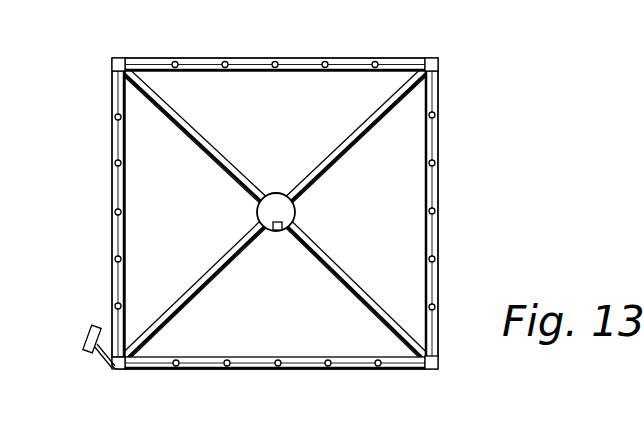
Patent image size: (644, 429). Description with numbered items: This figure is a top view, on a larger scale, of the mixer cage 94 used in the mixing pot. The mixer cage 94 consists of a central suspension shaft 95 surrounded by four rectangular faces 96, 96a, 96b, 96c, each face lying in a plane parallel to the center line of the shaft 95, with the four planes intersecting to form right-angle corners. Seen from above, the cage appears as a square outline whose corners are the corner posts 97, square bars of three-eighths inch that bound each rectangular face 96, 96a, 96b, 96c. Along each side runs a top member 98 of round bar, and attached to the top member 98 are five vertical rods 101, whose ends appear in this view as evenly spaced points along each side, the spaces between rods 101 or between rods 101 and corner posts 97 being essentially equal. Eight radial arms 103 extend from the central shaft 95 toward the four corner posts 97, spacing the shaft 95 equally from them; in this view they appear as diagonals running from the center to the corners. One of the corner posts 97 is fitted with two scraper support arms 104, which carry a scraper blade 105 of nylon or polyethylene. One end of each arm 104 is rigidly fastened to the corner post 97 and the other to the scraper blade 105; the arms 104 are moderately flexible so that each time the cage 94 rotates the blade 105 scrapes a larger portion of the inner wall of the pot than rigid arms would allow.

The mixer cage 94 is at (284, 215).
The central suspension shaft 95 is at (270, 197).
The rectangular face 96 is at (249, 376).
The rectangular face 96a is at (108, 174).
The rectangular face 96b is at (298, 50).
The rectangular face 96c is at (448, 168).
The corner post 97 is at (441, 360).
The top member 98 is at (408, 58).
The vertical rods 101 is at (327, 62).
The radial arms 103 is at (228, 176).
The scraper support arms 104 is at (103, 335).
The scraper blade 105 is at (84, 338).